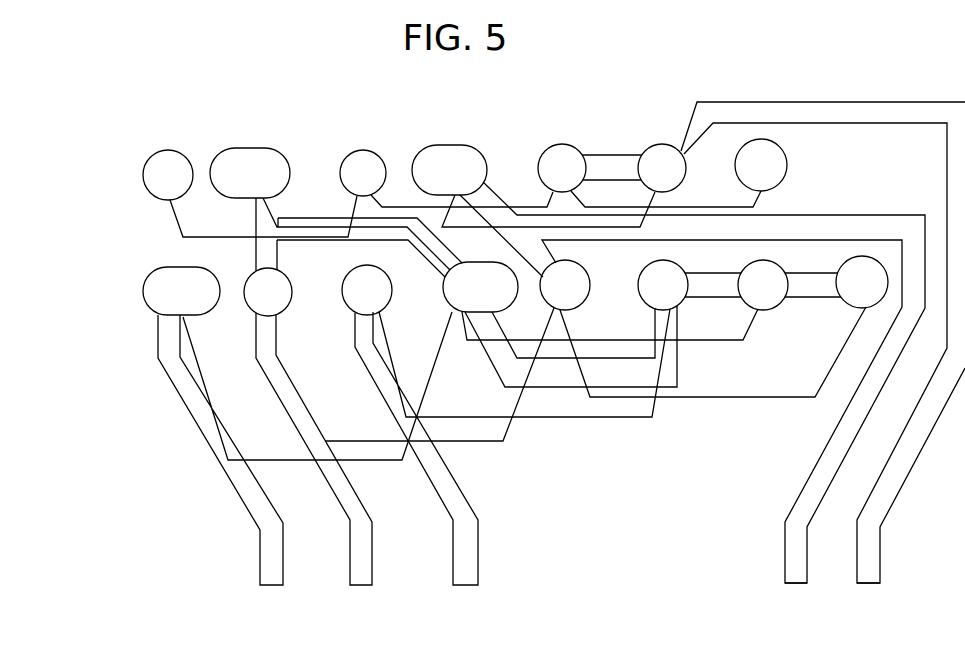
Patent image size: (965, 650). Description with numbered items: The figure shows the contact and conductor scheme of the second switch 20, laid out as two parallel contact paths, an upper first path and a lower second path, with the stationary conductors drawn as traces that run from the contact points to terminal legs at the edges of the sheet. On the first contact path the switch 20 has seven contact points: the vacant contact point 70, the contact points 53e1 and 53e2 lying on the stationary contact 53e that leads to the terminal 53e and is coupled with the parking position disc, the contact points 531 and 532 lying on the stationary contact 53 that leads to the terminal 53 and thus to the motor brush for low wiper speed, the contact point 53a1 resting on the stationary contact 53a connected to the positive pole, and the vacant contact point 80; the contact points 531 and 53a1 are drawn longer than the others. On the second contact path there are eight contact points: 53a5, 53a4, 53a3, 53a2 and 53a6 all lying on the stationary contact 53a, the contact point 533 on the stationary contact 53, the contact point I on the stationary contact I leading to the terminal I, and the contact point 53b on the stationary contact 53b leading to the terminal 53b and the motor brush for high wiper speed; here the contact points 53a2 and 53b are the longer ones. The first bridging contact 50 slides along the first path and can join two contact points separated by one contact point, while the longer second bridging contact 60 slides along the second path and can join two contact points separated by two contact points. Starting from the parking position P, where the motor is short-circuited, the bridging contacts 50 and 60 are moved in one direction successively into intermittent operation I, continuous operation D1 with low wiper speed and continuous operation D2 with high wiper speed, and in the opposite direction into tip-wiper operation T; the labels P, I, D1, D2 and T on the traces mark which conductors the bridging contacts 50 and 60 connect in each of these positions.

The second switch 20 is at (509, 353).
The first bridging contact 50 is at (603, 227).
The stationary contact 53 is at (790, 577).
The stationary contact 53a is at (372, 580).
The contact point 53a1 is at (336, 212).
The contact point 53a2 is at (560, 324).
The contact point 53a3 is at (689, 285).
The contact point 53a4 is at (789, 285).
The contact point 53a5 is at (862, 282).
The contact point 53a6 is at (268, 292).
The stationary contact 53b is at (290, 600).
The stationary contact 53e is at (862, 577).
The contact point 53e1 is at (801, 342).
The contact point 53e2 is at (649, 175).
The contact point 531 is at (668, 364).
The contact point 532 is at (446, 178).
The contact point 533 is at (703, 328).
The second bridging contact 60 is at (697, 343).
The contact point 70 is at (761, 165).
The contact point 80 is at (250, 193).
The stationary contact I is at (458, 603).
The parking position P is at (572, 227).
The tip-wiper operation T is at (717, 204).
The continuous operation with low wiper speed D1 is at (317, 227).
The continuous operation with high wiper speed D2 is at (215, 237).